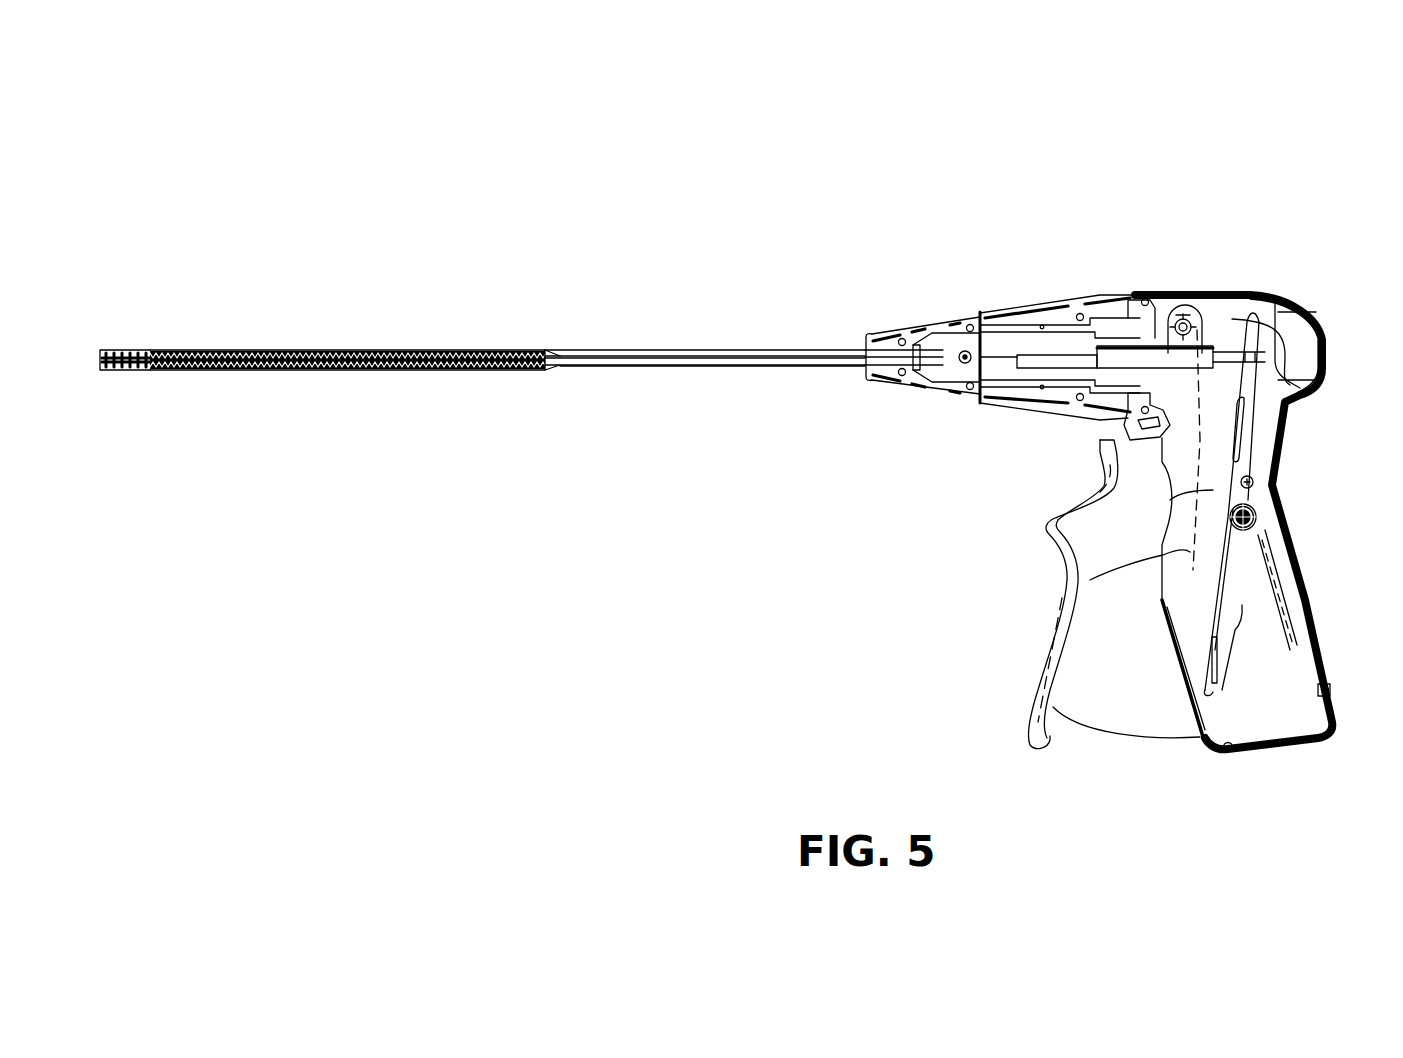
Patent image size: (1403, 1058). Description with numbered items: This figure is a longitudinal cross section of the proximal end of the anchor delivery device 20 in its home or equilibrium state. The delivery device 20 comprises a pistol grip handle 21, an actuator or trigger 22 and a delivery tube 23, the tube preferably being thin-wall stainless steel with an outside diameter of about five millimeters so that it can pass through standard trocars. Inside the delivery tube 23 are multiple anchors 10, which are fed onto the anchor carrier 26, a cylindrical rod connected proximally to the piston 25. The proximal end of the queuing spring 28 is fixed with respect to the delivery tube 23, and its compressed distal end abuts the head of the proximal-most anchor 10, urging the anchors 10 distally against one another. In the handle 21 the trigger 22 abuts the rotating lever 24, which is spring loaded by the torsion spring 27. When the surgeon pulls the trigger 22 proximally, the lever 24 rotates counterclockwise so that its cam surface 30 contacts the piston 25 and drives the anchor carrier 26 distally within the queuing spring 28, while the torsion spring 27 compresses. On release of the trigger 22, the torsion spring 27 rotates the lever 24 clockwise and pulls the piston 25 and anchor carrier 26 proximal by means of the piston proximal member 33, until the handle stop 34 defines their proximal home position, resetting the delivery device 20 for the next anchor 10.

The anchor 10 is at (140, 352).
The delivery device 20 is at (945, 162).
The pistol grip handle 21 is at (1237, 753).
The trigger 22 is at (1065, 522).
The delivery tube 23 is at (797, 368).
The rotating lever 24 is at (1252, 318).
The piston 25 is at (1147, 345).
The anchor carrier 26 is at (638, 354).
The torsion spring 27 is at (1285, 527).
The queuing spring 28 is at (343, 352).
The cam surface 30 is at (1250, 340).
The piston proximal member 33 is at (1272, 308).
The handle stop 34 is at (1328, 385).